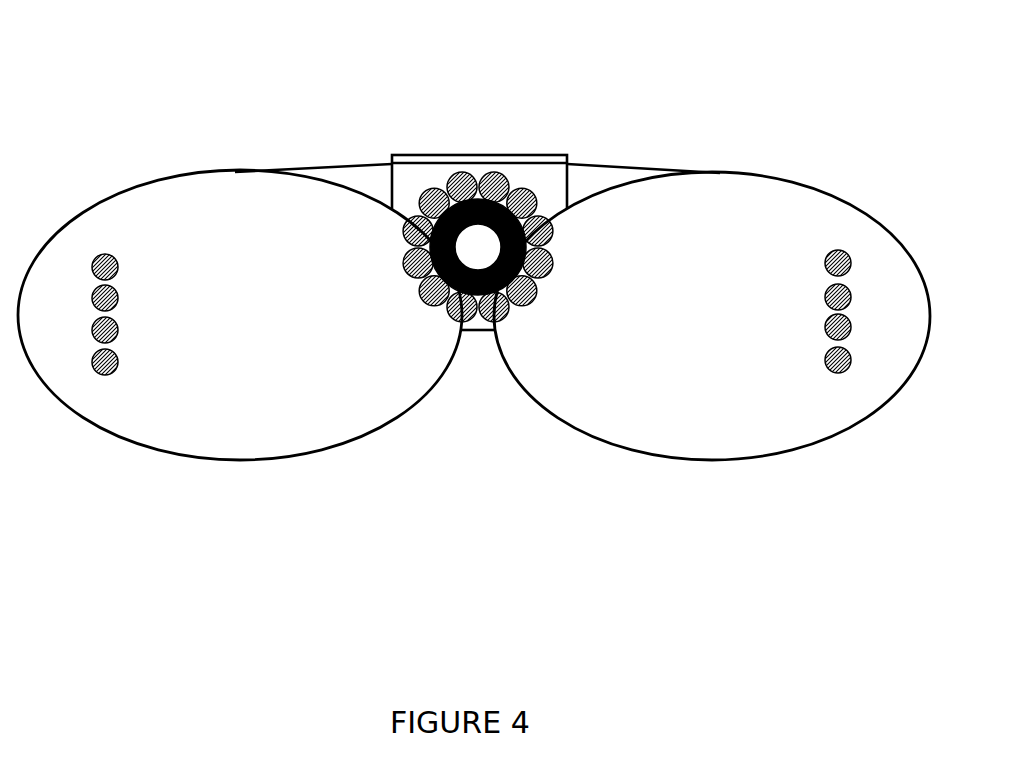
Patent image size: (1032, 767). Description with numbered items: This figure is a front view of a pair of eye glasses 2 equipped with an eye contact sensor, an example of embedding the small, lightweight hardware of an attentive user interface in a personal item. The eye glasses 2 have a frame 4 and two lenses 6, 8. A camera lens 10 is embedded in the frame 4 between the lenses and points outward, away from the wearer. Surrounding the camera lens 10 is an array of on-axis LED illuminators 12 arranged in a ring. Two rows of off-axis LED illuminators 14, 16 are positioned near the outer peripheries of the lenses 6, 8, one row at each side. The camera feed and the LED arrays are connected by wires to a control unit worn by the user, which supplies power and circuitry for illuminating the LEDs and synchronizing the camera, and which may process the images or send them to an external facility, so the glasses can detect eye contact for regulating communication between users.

The eye glasses 2 is at (693, 113).
The frame 4 is at (810, 188).
The lens 6 is at (263, 330).
The lens 8 is at (676, 317).
The camera lens 10 is at (478, 240).
The on-axis LED illuminators 12 is at (406, 219).
The off-axis LED illuminators 14 is at (122, 375).
The off-axis LED illuminators 16 is at (825, 373).